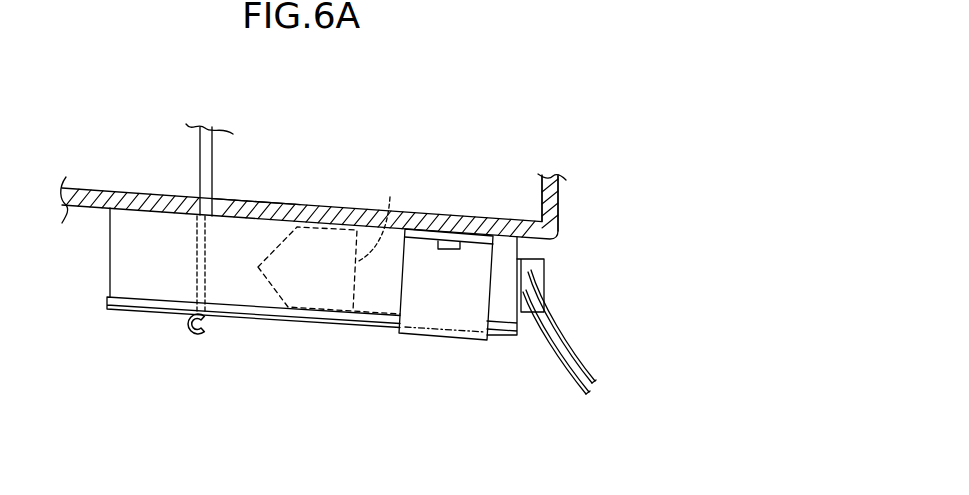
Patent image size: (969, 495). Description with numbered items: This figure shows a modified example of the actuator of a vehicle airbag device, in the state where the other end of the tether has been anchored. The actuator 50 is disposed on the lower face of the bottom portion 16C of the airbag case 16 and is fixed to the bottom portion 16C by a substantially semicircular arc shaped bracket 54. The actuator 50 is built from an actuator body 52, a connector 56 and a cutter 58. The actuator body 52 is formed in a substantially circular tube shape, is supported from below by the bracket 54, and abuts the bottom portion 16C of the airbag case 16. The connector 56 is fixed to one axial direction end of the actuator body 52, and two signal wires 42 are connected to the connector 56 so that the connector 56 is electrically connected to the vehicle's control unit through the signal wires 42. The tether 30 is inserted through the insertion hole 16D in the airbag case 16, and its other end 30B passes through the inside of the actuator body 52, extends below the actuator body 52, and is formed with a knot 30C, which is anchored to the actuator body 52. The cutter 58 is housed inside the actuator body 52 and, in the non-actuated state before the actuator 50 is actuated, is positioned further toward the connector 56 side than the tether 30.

The airbag case 16 is at (103, 208).
The bottom portion 16C is at (437, 219).
The insertion hole 16D is at (213, 195).
The tether 30 is at (213, 157).
The other end of the tether 30B is at (197, 276).
The knot 30C is at (194, 338).
The actuator 50 is at (363, 356).
The actuator body 52 is at (318, 322).
The bracket 54 is at (450, 340).
The connector 56 is at (545, 283).
The signal wires 42 is at (542, 343).
The cutter 58 is at (390, 197).